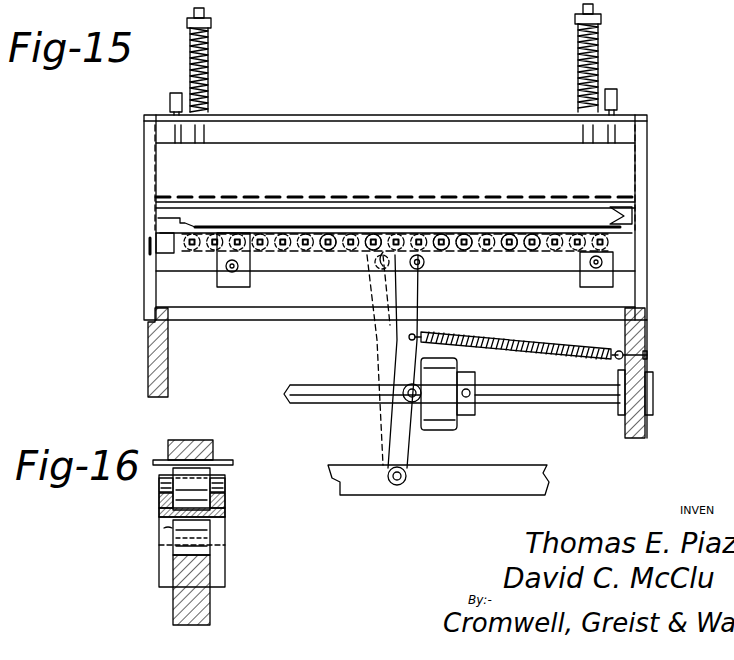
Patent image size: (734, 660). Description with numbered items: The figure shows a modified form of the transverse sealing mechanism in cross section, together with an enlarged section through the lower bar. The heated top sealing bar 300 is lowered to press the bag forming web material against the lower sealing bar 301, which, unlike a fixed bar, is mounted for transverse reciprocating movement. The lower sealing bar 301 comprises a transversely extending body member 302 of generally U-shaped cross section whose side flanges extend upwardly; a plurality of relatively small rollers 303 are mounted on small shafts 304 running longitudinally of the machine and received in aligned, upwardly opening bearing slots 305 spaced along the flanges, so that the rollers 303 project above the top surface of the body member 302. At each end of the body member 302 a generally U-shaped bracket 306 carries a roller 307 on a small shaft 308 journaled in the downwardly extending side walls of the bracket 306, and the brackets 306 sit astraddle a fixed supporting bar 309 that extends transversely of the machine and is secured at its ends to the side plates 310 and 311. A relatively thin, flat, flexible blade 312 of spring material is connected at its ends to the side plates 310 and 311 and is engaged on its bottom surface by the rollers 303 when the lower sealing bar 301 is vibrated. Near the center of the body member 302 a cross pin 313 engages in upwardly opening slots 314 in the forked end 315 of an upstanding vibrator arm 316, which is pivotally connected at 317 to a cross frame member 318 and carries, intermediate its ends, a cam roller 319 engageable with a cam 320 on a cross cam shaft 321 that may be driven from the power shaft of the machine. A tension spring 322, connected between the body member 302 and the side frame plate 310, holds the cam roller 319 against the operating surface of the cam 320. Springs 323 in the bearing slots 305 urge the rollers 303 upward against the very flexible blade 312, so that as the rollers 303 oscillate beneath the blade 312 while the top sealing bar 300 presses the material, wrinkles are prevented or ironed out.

In FIG. 15, the top sealing bar 300 is at (175, 215).
In FIG. 16, the top sealing bar 300 is at (213, 450).
In FIG. 15, the lower sealing bar 301 is at (605, 242).
In FIG. 15, the body member 302 is at (262, 238).
In FIG. 16, the body member 302 is at (159, 514).
In FIG. 15, the rollers 303 is at (373, 238).
In FIG. 16, the rollers 303 is at (210, 476).
In FIG. 15, the small shafts 304 is at (509, 237).
In FIG. 16, the small shafts 304 is at (225, 489).
In FIG. 15, the bearing slots 305 is at (546, 236).
In FIG. 16, the bearing slots 305 is at (159, 500).
In FIG. 15, the U-shaped brackets 306 is at (248, 288).
In FIG. 16, the U-shaped brackets 306 is at (159, 571).
In FIG. 15, the roller 307 is at (240, 266).
In FIG. 16, the roller 307 is at (210, 527).
In FIG. 15, the small shaft 308 is at (229, 268).
In FIG. 16, the small shaft 308 is at (160, 528).
In FIG. 15, the fixed supporting bar 309 is at (478, 308).
In FIG. 16, the fixed supporting bar 309 is at (210, 612).
In FIG. 15, the side plate 310 is at (647, 432).
In FIG. 15, the side plate 311 is at (169, 382).
In FIG. 15, the flexible blade 312 is at (620, 216).
In FIG. 16, the flexible blade 312 is at (233, 463).
In FIG. 15, the cross pin 313 is at (424, 262).
In FIG. 15, the slots 314 is at (405, 270).
In FIG. 15, the forked end 315 is at (400, 282).
In FIG. 15, the vibrator arm 316 is at (384, 430).
In FIG. 15, the pivotal connection 317 is at (400, 485).
In FIG. 15, the cross frame member 318 is at (470, 497).
In FIG. 15, the cam roller 319 is at (409, 387).
In FIG. 15, the cam 320 is at (430, 432).
In FIG. 15, the cam shaft 321 is at (520, 404).
In FIG. 15, the tension spring 322 is at (539, 342).
In FIG. 16, the springs 323 is at (225, 509).